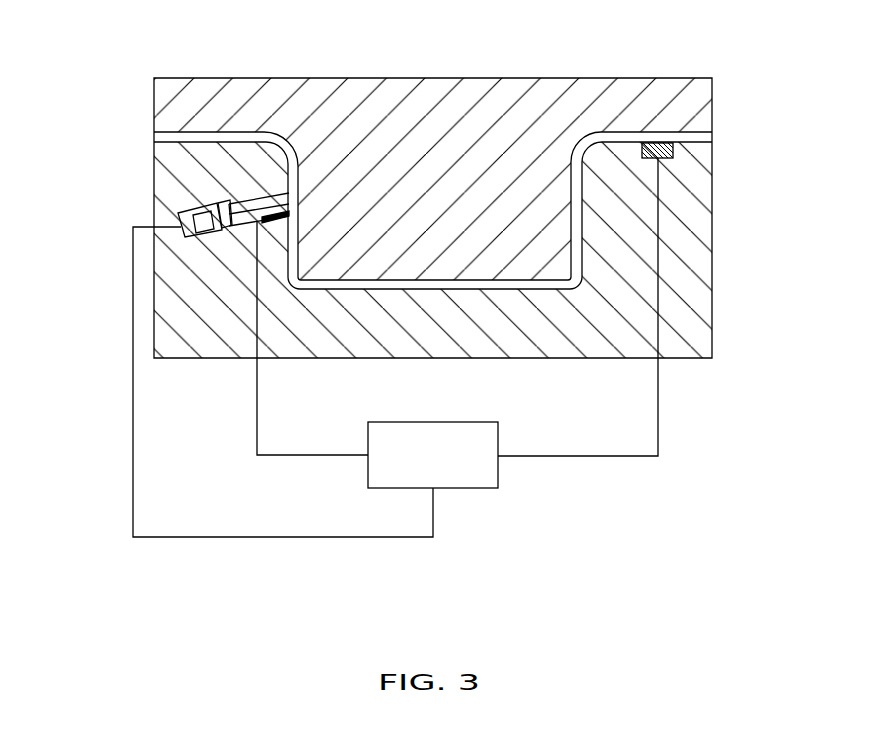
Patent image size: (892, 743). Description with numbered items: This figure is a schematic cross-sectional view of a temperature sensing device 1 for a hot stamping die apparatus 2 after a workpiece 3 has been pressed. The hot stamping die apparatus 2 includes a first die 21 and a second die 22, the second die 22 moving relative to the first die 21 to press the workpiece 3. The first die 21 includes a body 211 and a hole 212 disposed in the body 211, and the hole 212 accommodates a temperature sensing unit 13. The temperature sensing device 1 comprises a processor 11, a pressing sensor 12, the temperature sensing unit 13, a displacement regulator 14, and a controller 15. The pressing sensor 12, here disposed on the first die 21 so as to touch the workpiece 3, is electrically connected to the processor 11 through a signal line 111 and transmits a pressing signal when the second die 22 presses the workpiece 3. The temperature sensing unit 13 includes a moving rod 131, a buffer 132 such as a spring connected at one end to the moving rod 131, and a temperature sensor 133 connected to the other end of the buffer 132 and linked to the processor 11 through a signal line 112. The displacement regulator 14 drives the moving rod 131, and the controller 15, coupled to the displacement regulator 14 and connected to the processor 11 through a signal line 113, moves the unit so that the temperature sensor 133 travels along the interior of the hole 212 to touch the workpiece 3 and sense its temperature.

The temperature sensing device 1 is at (137, 577).
The hot stamping die apparatus 2 is at (488, 218).
The workpiece 3 is at (622, 132).
The processor 11 is at (479, 488).
The pressing sensor 12 is at (658, 150).
The temperature sensing unit 13 is at (167, 154).
The displacement regulator 14 is at (181, 218).
The controller 15 is at (188, 232).
The first die 21 is at (703, 230).
The second die 22 is at (706, 118).
The signal line 111 is at (658, 420).
The signal line 112 is at (313, 455).
The signal line 113 is at (235, 537).
The moving rod 131 is at (242, 207).
The buffer 132 is at (275, 200).
The temperature sensor 133 is at (285, 194).
The body 211 is at (272, 260).
The hole 212 is at (271, 190).